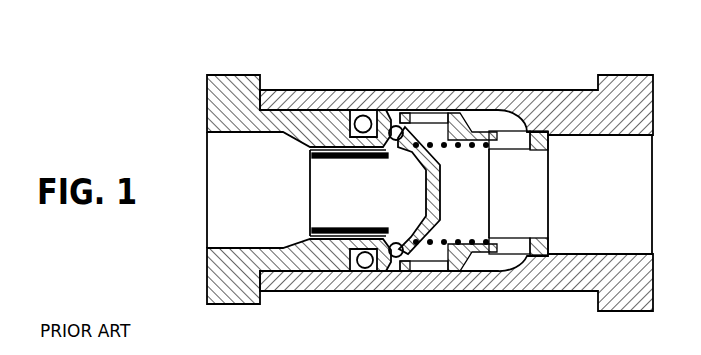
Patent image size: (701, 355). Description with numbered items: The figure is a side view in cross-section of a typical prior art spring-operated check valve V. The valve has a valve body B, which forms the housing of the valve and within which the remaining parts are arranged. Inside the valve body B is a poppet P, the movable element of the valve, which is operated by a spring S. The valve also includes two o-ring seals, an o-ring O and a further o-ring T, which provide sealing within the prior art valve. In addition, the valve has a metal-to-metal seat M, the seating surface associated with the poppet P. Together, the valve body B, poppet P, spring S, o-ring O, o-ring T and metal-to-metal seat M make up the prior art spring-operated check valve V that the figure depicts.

The valve body B is at (315, 103).
The o-ring T is at (343, 292).
The o-ring O is at (387, 117).
The metal-to-metal seat M is at (375, 230).
The poppet P is at (440, 178).
The spring S is at (443, 143).
The check valve V is at (388, 294).